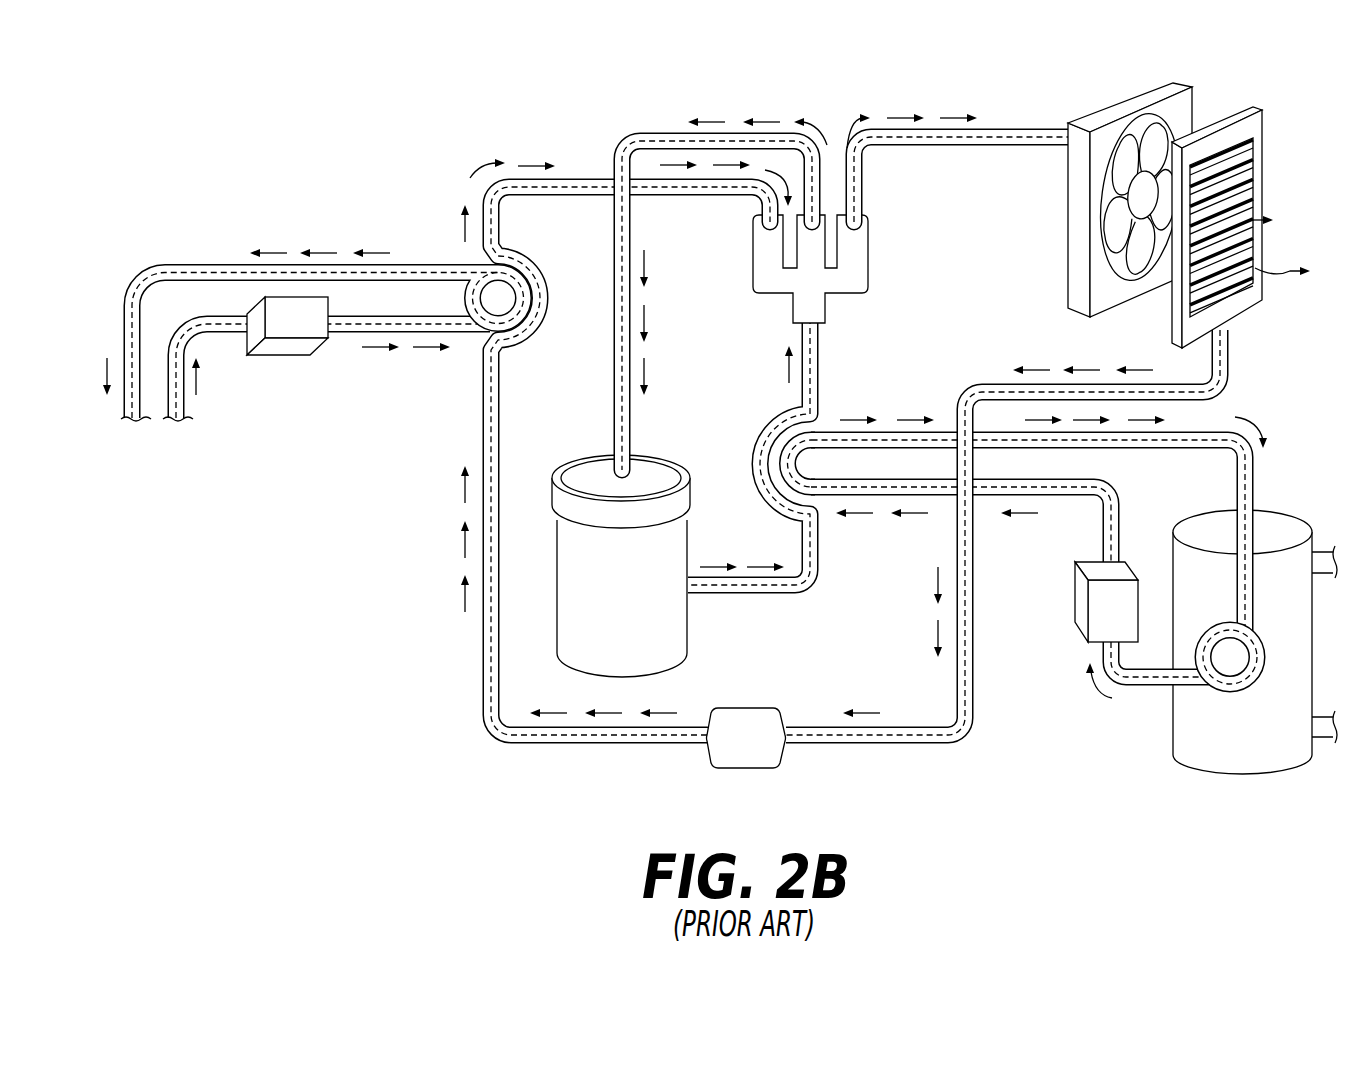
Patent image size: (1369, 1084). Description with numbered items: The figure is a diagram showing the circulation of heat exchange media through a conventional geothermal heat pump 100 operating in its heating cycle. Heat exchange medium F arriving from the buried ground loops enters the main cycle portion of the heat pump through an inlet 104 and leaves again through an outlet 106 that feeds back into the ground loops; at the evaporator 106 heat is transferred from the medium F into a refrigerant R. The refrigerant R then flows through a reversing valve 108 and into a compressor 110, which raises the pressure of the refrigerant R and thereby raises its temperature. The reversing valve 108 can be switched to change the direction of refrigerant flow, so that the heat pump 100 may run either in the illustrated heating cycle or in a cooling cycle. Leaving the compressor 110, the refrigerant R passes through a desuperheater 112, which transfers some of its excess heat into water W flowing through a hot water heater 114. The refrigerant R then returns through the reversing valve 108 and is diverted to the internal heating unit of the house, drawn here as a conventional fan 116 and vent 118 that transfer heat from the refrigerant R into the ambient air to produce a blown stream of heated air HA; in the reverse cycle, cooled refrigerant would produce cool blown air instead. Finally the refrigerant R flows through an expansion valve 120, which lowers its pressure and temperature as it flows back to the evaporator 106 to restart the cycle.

The geothermal heat pump 100 is at (426, 132).
The inlet 104 is at (182, 443).
The evaporator 106 is at (522, 262).
The reversing valve 108 is at (868, 284).
The compressor 110 is at (700, 623).
The desuperheater 112 is at (813, 507).
The hot water heater 114 is at (1183, 768).
The fan 116 is at (1193, 101).
The vent 118 is at (1255, 133).
The expansion valve 120 is at (760, 708).